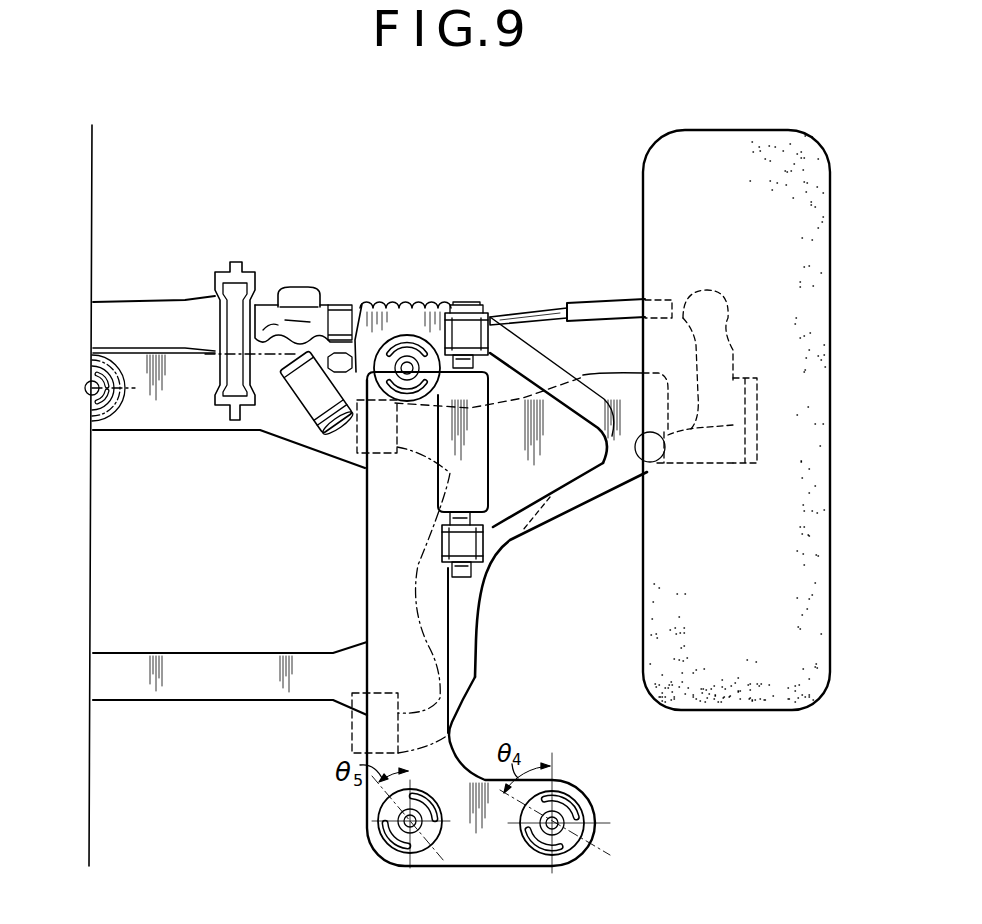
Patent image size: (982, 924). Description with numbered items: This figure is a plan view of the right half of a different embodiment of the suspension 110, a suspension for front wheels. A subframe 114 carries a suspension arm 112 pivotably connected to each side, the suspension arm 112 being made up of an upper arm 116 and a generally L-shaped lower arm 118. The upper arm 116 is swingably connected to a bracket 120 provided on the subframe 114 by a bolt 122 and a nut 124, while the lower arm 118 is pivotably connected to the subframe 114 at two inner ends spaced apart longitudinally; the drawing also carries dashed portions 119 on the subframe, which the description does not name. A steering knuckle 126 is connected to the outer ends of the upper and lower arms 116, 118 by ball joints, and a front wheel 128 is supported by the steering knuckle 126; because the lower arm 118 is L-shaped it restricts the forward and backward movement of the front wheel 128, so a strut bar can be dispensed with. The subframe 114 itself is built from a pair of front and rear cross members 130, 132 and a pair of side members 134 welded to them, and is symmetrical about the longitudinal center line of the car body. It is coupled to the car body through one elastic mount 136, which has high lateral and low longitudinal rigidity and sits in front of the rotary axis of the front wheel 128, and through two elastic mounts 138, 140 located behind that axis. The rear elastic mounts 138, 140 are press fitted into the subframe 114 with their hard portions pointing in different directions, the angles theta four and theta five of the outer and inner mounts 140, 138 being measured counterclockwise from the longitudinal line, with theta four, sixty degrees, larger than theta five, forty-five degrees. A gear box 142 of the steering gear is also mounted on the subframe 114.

The suspension 110 is at (490, 304).
The suspension arm 112 is at (587, 370).
The subframe 114 is at (452, 673).
The upper arm 116 is at (572, 497).
The lower arm 118 is at (522, 400).
The knuckle mounting portions 119 is at (360, 440).
The bracket 120 is at (490, 513).
The bolt 122 is at (424, 302).
The nut 124 is at (462, 302).
The steering knuckle 126 is at (718, 360).
The front wheel 128 is at (750, 135).
The cross member 130 is at (163, 430).
The cross member 132 is at (182, 682).
The side member 134 is at (368, 572).
The elastic mount 136 is at (383, 362).
The elastic mount 138 is at (383, 810).
The elastic mount 140 is at (583, 828).
The gear box 142 is at (267, 313).